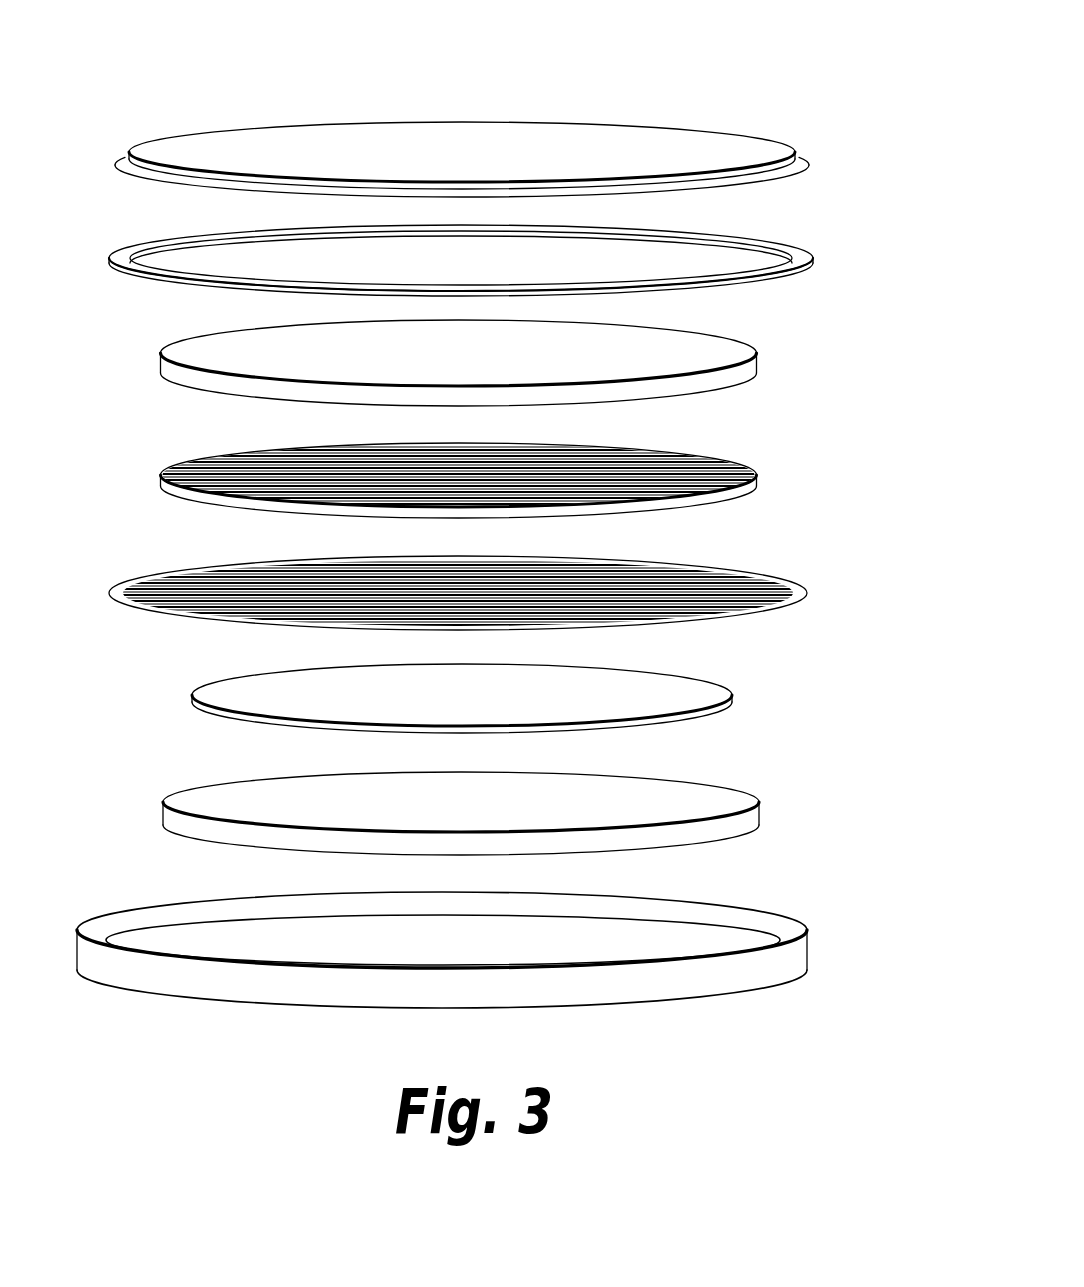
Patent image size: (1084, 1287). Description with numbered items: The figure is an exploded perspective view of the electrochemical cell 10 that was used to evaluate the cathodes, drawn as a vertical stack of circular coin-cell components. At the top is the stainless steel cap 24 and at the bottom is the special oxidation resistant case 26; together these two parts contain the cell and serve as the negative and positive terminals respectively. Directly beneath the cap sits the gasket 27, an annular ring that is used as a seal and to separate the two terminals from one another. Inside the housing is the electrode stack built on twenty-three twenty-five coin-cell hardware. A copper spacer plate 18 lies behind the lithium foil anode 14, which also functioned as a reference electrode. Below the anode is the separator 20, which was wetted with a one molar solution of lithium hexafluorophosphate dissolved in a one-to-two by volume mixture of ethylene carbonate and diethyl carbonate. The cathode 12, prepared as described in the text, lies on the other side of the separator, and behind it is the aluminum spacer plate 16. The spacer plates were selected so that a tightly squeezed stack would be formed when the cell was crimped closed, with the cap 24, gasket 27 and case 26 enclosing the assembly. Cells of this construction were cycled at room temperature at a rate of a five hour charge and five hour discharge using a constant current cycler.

The electrochemical cell 10 is at (672, 92).
The cathode 12 is at (687, 692).
The lithium foil anode 14 is at (727, 472).
The aluminum spacer plate 16 is at (712, 800).
The copper spacer plate 18 is at (718, 352).
The separator 20 is at (753, 590).
The stainless steel cap 24 is at (778, 148).
The oxidation resistant case 26 is at (790, 960).
The gasket 27 is at (803, 255).